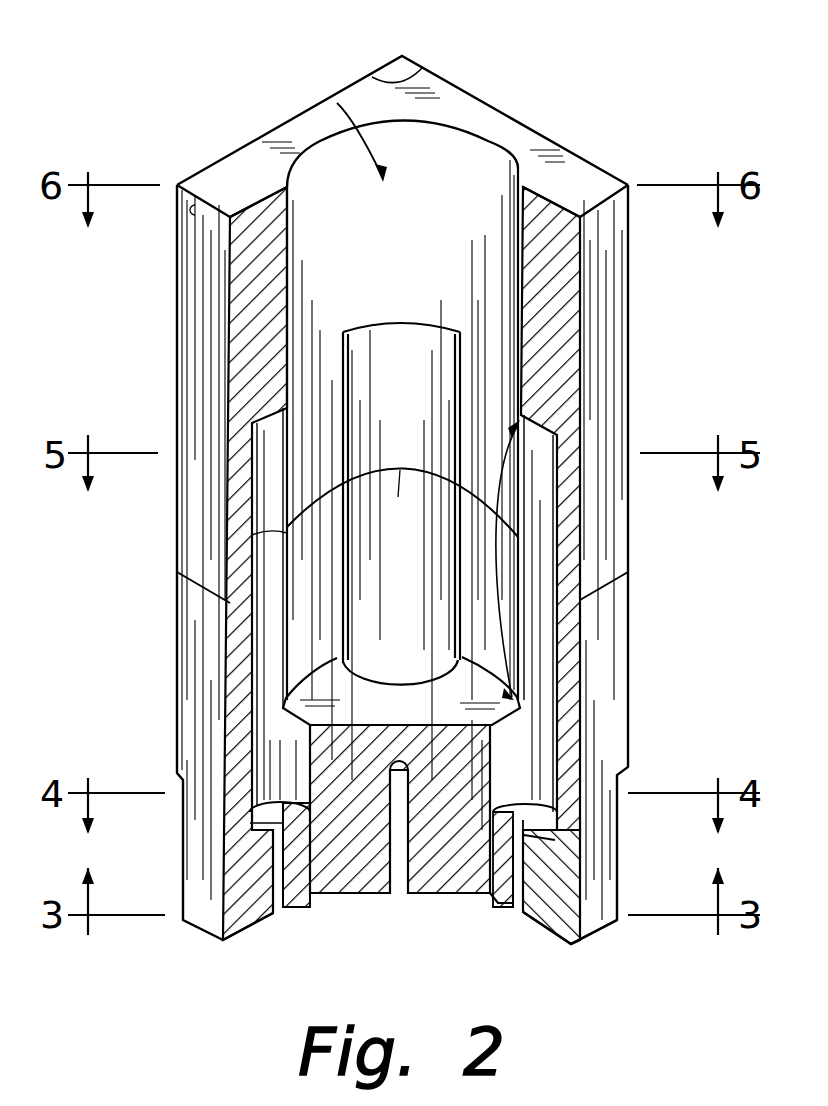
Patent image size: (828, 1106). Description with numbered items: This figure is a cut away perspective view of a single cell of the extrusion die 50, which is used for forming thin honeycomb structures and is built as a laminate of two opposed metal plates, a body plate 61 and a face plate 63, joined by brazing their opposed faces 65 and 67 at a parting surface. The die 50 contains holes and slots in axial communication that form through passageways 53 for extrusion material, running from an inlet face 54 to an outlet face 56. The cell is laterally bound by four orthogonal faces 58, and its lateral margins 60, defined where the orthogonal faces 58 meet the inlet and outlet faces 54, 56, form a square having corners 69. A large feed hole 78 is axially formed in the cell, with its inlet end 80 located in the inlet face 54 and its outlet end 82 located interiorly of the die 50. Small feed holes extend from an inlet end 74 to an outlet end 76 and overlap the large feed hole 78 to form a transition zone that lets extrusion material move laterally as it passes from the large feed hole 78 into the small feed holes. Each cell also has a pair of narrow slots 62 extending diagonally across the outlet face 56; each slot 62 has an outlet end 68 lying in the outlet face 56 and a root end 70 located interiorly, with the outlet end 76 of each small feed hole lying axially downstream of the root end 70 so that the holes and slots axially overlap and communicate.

The extrusion die 50 is at (597, 74).
The through passageways 53 is at (332, 98).
The inlet face 54 is at (283, 135).
The outlet face 56 is at (250, 927).
The orthogonal faces 58 is at (212, 172).
The lateral margins 60 is at (366, 78).
The body plate 61 is at (628, 330).
The slots 62 is at (397, 835).
The face plate 63 is at (628, 648).
The opposed face 65 is at (196, 578).
The opposed face 67 is at (608, 580).
The outlet end 68 is at (398, 888).
The corners 69 is at (403, 57).
The root end 70 is at (385, 778).
The inlet end 74 is at (548, 412).
The outlet end 76 is at (521, 810).
The large feed hole 78 is at (545, 290).
The inlet end 80 is at (502, 132).
The outlet end 82 is at (450, 735).